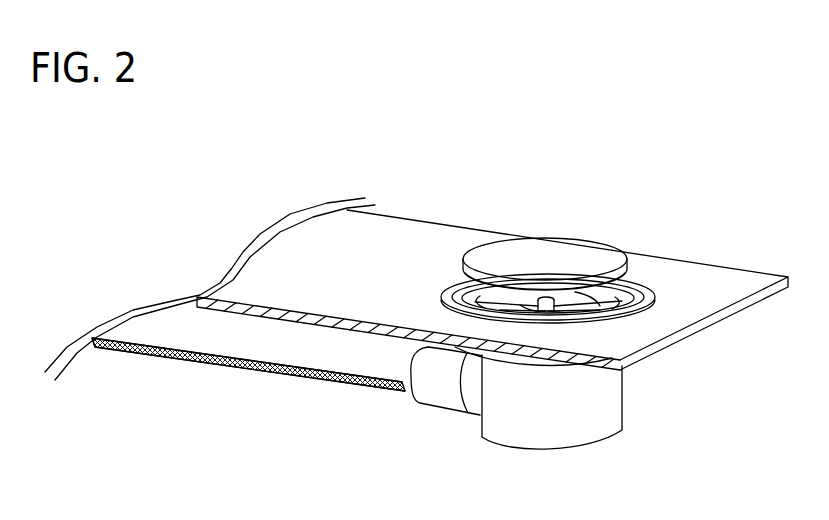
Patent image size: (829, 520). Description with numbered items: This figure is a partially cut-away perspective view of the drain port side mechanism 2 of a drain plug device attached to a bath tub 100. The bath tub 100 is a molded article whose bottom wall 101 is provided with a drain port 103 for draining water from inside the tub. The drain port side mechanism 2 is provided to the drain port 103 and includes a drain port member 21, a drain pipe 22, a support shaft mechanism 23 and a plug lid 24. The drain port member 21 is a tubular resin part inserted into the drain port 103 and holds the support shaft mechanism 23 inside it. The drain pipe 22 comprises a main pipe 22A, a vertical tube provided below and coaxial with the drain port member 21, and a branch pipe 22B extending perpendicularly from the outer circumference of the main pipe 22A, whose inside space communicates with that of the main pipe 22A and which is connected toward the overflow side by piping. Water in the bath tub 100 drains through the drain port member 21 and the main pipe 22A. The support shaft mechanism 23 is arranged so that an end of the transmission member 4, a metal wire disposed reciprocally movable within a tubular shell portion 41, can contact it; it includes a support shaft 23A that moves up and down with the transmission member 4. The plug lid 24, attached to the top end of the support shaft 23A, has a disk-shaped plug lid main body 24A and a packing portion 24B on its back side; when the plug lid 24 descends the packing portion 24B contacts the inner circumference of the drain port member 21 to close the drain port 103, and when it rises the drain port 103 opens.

The drain port side mechanism 2 is at (627, 202).
The transmission member 4 is at (248, 374).
The tubular shell portion 41 is at (161, 357).
The drain port member 21 is at (585, 272).
The drain pipe 22 is at (566, 415).
The main pipe 22A is at (623, 418).
The branch pipe 22B is at (443, 410).
The support shaft mechanism 23 is at (530, 253).
The support shaft 23A is at (575, 281).
The plug lid 24 is at (575, 226).
The plug lid main body 24A is at (545, 264).
The packing portion 24B is at (623, 287).
The bath tub 100 is at (725, 267).
The bottom wall 101 is at (256, 274).
The drain port 103 is at (667, 257).